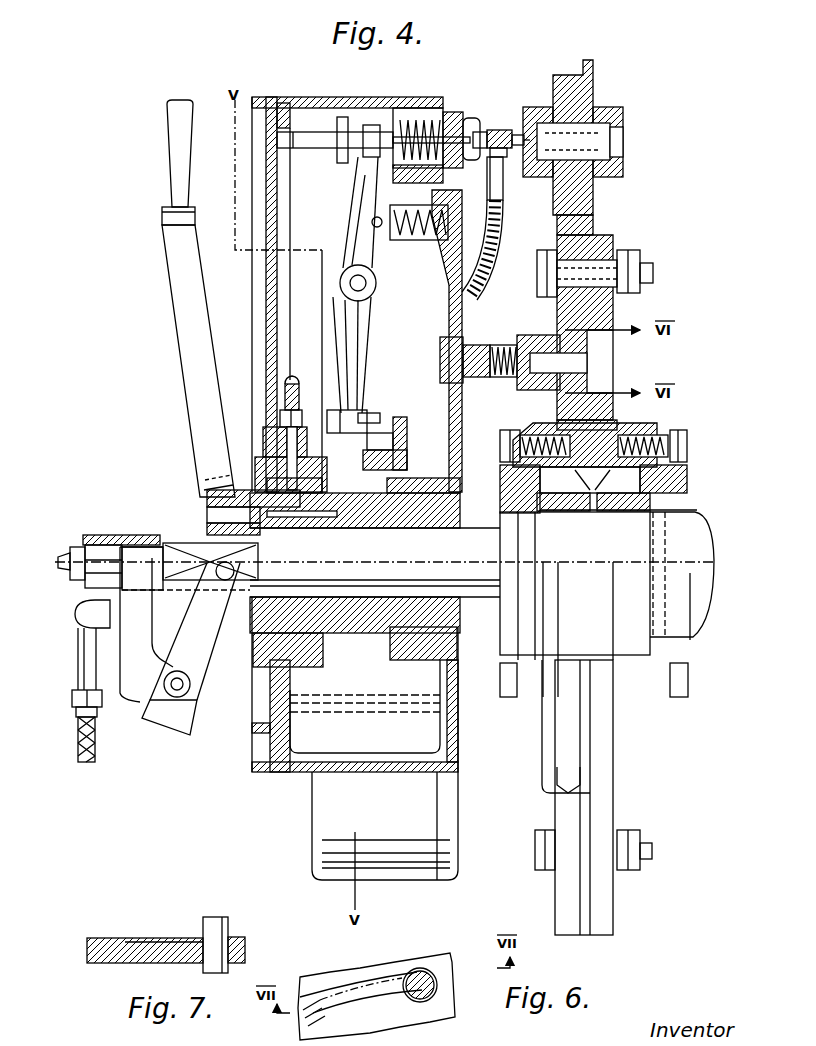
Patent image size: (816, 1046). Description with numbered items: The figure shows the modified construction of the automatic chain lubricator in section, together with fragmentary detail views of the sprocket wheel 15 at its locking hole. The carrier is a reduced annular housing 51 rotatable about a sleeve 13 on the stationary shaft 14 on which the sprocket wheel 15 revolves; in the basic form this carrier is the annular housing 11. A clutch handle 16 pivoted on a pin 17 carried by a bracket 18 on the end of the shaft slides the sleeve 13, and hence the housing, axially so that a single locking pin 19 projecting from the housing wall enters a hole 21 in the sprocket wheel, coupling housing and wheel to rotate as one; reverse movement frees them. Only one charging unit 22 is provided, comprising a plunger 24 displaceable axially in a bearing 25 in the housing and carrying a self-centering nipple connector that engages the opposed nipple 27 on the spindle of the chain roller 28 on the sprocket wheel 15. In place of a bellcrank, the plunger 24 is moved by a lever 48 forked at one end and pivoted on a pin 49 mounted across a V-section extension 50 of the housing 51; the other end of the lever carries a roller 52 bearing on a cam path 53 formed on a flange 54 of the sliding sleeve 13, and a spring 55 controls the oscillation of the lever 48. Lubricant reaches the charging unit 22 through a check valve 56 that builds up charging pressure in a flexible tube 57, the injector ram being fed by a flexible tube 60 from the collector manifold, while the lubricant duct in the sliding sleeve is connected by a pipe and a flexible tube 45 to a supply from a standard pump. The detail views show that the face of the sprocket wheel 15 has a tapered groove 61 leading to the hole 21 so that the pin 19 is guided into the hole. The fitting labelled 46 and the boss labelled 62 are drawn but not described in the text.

In FIG. 4, the annular housing 11 is at (385, 826).
In FIG. 4, the sleeve 13 is at (378, 512).
In FIG. 4, the stationary shaft 14 is at (384, 574).
In FIG. 4, the sprocket wheel 15 is at (600, 330).
In FIG. 7, the sprocket wheel 15 is at (165, 963).
In FIG. 6, the sprocket wheel 15 is at (317, 977).
In FIG. 4, the clutch handle 16 is at (195, 367).
In FIG. 4, the pin 17 is at (190, 684).
In FIG. 4, the bracket 18 is at (146, 624).
In FIG. 4, the locking pin 19 is at (573, 370).
In FIG. 7, the locking pin 19 is at (218, 918).
In FIG. 6, the locking pin 19 is at (430, 980).
In FIG. 4, the hole 21 is at (583, 357).
In FIG. 7, the hole 21 is at (246, 946).
In FIG. 6, the hole 21 is at (440, 993).
In FIG. 4, the charging unit 22 is at (500, 129).
In FIG. 4, the plunger 24 is at (450, 111).
In FIG. 4, the bearing 25 is at (425, 108).
In FIG. 4, the nipple 27 is at (517, 133).
In FIG. 4, the chain roller 28 is at (589, 86).
In FIG. 4, the flexible tube 45 is at (97, 735).
In FIG. 4, the fitting 46 is at (80, 610).
In FIG. 4, the lever 48 is at (367, 350).
In FIG. 4, the pin 49 is at (378, 283).
In FIG. 4, the V-section extension 50 is at (278, 236).
In FIG. 4, the reduced annular housing 51 is at (293, 772).
In FIG. 4, the roller 52 is at (360, 412).
In FIG. 4, the cam path 53 is at (370, 418).
In FIG. 4, the flange 54 is at (404, 428).
In FIG. 4, the spring 55 is at (428, 242).
In FIG. 4, the check valve 56 is at (504, 196).
In FIG. 4, the flexible tube 57 is at (480, 291).
In FIG. 4, the flexible tube 60 is at (294, 378).
In FIG. 7, the tapered groove 61 is at (172, 936).
In FIG. 6, the tapered groove 61 is at (361, 999).
In FIG. 4, the boss 62 is at (312, 484).